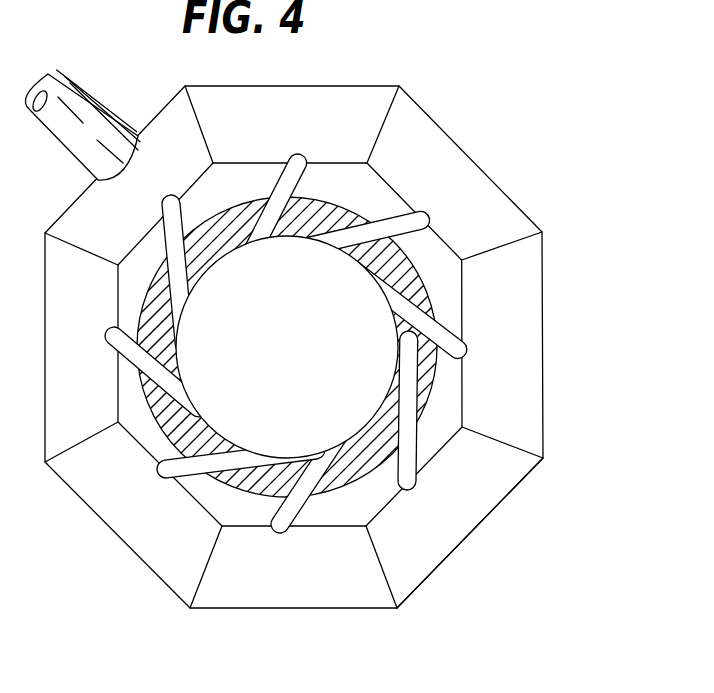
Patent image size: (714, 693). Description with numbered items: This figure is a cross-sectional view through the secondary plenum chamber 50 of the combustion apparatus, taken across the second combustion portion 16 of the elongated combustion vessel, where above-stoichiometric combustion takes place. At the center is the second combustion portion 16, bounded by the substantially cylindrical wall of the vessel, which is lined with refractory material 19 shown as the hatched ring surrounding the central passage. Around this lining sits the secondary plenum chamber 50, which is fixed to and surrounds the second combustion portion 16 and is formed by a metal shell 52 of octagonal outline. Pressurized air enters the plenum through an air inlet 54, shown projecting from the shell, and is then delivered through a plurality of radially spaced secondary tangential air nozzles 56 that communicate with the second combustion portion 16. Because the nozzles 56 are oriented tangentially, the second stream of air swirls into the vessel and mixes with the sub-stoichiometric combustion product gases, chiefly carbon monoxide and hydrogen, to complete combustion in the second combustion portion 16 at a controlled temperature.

The second combustion portion 16 is at (335, 362).
The refractory material 19 is at (421, 370).
The secondary plenum chamber 50 is at (392, 585).
The metal shell 52 is at (491, 515).
The air inlet 54 is at (72, 80).
The secondary tangential air nozzles 56 is at (443, 333).